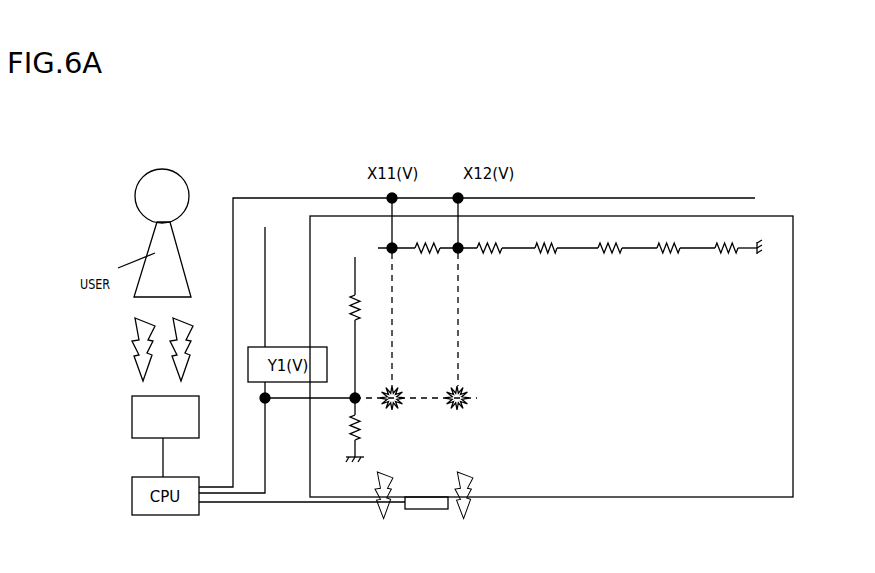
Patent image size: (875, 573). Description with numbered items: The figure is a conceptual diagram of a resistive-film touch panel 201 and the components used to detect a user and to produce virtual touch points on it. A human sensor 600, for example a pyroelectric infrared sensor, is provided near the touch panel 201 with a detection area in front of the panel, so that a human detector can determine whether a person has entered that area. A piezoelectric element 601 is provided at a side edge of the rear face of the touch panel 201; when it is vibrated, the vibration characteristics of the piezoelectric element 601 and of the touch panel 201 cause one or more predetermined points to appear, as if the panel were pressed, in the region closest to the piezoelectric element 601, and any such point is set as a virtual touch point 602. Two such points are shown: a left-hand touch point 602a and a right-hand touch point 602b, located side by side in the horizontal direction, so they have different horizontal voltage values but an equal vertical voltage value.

The human sensor 600 is at (130, 418).
The piezoelectric element 601 is at (427, 512).
The virtual touch point 602 is at (472, 429).
The left-hand touch point 602a is at (390, 405).
The right-hand touch point 602b is at (468, 402).
The touch panel 201 is at (793, 400).